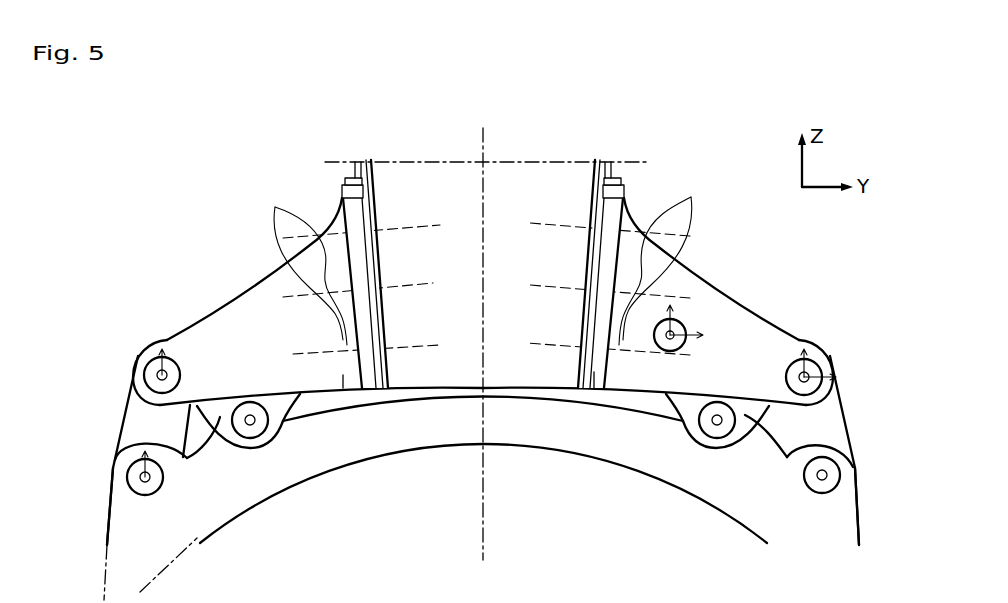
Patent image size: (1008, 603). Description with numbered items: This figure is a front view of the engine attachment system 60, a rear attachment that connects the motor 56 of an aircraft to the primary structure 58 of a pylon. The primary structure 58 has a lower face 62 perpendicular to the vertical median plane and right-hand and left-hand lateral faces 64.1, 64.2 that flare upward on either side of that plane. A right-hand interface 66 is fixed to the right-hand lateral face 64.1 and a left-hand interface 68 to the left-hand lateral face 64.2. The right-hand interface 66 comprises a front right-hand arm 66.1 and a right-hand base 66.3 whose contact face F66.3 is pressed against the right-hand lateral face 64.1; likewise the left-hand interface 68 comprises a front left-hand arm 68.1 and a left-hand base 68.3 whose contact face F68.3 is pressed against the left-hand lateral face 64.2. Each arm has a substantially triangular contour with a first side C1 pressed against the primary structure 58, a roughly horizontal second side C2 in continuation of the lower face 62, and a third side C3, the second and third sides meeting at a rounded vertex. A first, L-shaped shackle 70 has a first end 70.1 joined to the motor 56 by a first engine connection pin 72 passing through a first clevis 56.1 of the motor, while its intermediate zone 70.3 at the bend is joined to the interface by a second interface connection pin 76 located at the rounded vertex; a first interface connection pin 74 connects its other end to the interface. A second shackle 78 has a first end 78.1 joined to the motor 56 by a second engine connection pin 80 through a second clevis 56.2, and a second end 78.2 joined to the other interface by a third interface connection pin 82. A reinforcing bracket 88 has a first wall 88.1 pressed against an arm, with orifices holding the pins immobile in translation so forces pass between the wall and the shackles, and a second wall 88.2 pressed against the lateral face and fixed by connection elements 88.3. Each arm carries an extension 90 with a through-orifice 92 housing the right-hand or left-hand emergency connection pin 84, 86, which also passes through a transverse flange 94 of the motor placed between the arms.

The motor 56 is at (110, 568).
The first clevis 56.1 is at (868, 518).
The second clevis 56.2 is at (150, 527).
The primary structure 58 is at (500, 186).
The engine attachment system 60 is at (198, 180).
The lower face 62 is at (447, 388).
The right-hand lateral face 64.1 is at (610, 163).
The left-hand lateral face 64.2 is at (358, 163).
The right-hand interface 66 is at (778, 290).
The front right-hand arm 66.1 is at (595, 372).
The right-hand base 66.3 is at (627, 185).
The left-hand interface 68 is at (322, 184).
The front left-hand arm 68.1 is at (340, 375).
The left-hand base 68.3 is at (342, 178).
The first, L-shaped shackle 70 is at (826, 418).
The first end of the first shackle 70.1 is at (855, 457).
The intermediate zone 70.3 is at (825, 348).
The first engine connection pin 72 is at (795, 510).
The first interface connection pin 74 is at (696, 308).
The second interface connection pin 76 is at (823, 341).
The second shackle 78 is at (120, 400).
The first end of the second shackle 78.1 is at (112, 450).
The second end of the second shackle 78.2 is at (158, 339).
The second engine connection pin 80 is at (115, 477).
The third interface connection pin 82 is at (134, 350).
The right-hand emergency connection pin 84 is at (697, 450).
The left-hand emergency connection pin 86 is at (280, 420).
The reinforcing bracket 88 is at (261, 270).
The first wall 88.1 is at (253, 322).
The second wall 88.2 is at (380, 388).
The connection element 88.3 is at (485, 259).
The extension 90 is at (293, 412).
The through-orifice 92 is at (247, 401).
The transverse flange 94 is at (195, 458).
The first side C1 is at (590, 190).
The second side C2 is at (377, 388).
The third side C3 is at (745, 289).
The contact face of the right-hand base F66.3 is at (593, 188).
The contact face of the left-hand base F68.3 is at (375, 190).